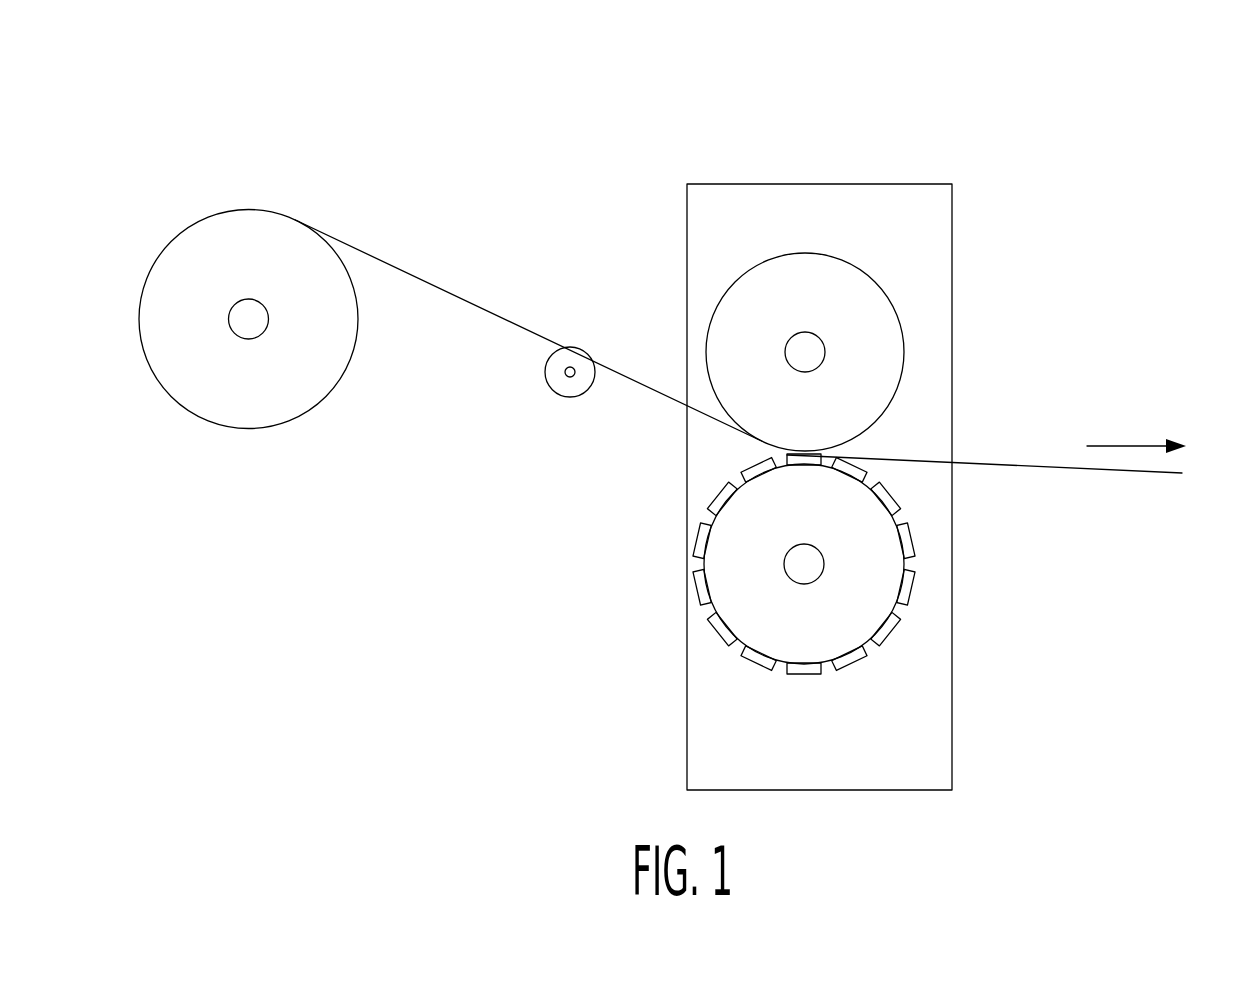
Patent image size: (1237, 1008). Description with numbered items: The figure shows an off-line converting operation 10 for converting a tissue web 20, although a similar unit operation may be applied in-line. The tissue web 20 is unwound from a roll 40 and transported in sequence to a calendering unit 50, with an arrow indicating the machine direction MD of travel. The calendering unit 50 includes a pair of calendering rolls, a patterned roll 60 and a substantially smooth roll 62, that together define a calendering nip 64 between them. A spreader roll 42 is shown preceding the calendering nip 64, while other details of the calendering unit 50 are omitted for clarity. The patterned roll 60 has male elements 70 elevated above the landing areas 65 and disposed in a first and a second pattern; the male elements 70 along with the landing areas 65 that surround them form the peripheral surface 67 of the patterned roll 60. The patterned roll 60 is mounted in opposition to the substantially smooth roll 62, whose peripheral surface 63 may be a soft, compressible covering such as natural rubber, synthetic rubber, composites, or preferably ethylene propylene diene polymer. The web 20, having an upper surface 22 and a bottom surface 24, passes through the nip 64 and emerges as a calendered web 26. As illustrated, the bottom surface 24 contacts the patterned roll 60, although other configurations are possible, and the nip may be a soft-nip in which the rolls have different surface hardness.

The off-line converting operation 10 is at (417, 127).
The tissue web 20 is at (468, 290).
The upper surface 22 is at (1002, 462).
The bottom surface 24 is at (1002, 517).
The calendered web 26 is at (1150, 473).
The roll 40 is at (213, 404).
The spreader roll 42 is at (553, 368).
The calendering unit 50 is at (845, 184).
The patterned roll 60 is at (818, 640).
The substantially smooth roll 62 is at (904, 341).
The peripheral surface 63 is at (873, 329).
The calendering nip 64 is at (721, 455).
The landing areas 65 is at (782, 666).
The peripheral surface 67 is at (881, 603).
The male elements 70 is at (811, 603).
The machine direction MD is at (1140, 446).